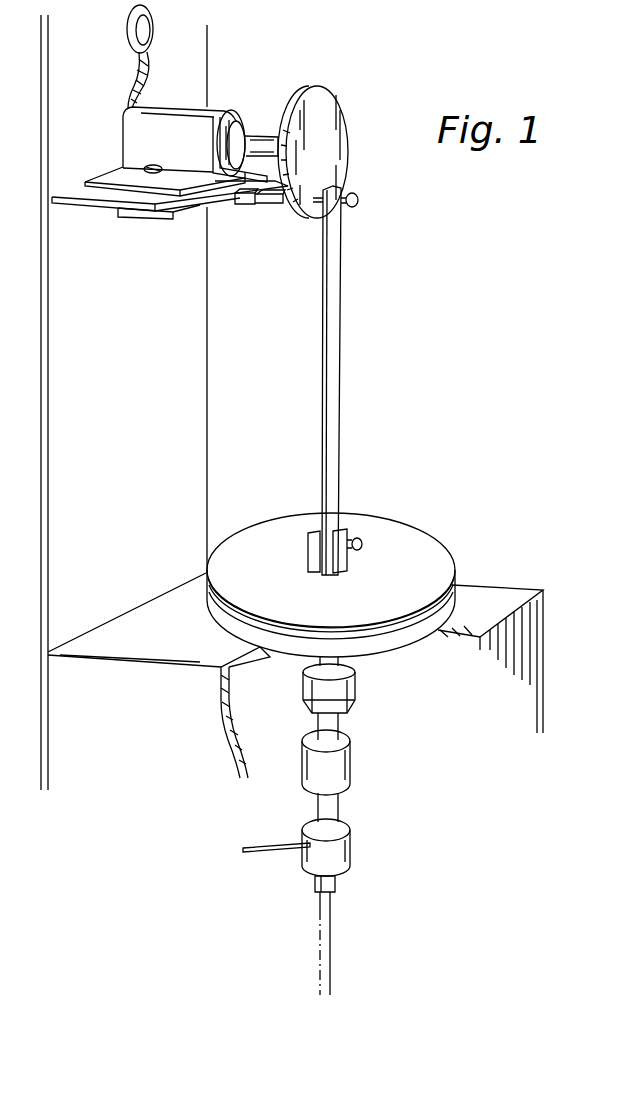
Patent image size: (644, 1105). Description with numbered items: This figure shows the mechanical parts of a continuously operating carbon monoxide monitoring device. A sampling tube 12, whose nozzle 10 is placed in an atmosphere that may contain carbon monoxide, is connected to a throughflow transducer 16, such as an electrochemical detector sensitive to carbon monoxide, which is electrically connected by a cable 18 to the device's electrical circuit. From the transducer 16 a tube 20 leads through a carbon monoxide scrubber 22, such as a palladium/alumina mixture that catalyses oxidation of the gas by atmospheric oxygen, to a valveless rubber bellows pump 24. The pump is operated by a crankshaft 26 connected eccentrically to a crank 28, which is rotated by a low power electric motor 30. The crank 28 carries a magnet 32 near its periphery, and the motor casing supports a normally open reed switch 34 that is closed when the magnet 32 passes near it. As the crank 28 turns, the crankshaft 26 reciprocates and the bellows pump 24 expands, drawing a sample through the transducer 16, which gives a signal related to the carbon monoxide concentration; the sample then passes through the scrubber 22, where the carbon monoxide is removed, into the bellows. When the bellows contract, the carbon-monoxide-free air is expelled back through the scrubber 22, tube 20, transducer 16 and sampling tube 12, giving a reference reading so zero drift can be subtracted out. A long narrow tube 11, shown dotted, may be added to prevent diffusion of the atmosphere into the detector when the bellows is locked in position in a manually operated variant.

The nozzle 10 is at (320, 908).
The long narrow tube 11 is at (332, 972).
The sampling tube 12 is at (342, 878).
The throughflow transducer 16 is at (352, 842).
The cable 18 is at (262, 845).
The tube 20 is at (340, 808).
The carbon monoxide scrubber 22 is at (345, 737).
The valveless rubber bellows pump 24 is at (400, 535).
The crankshaft 26 is at (332, 361).
The crank 28 is at (336, 118).
The low power electric motor 30 is at (213, 108).
The magnet 32 is at (262, 203).
The reed switch 34 is at (244, 205).